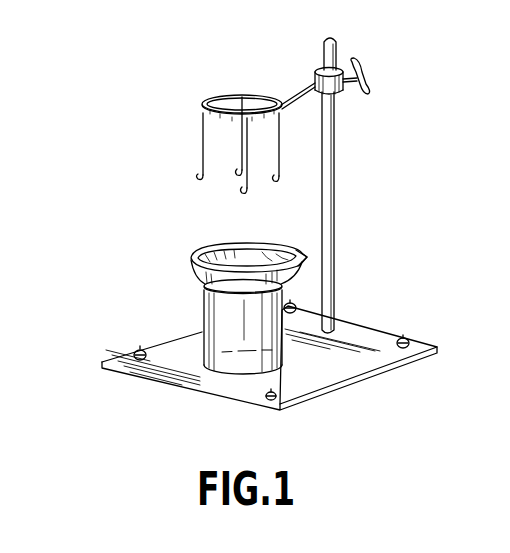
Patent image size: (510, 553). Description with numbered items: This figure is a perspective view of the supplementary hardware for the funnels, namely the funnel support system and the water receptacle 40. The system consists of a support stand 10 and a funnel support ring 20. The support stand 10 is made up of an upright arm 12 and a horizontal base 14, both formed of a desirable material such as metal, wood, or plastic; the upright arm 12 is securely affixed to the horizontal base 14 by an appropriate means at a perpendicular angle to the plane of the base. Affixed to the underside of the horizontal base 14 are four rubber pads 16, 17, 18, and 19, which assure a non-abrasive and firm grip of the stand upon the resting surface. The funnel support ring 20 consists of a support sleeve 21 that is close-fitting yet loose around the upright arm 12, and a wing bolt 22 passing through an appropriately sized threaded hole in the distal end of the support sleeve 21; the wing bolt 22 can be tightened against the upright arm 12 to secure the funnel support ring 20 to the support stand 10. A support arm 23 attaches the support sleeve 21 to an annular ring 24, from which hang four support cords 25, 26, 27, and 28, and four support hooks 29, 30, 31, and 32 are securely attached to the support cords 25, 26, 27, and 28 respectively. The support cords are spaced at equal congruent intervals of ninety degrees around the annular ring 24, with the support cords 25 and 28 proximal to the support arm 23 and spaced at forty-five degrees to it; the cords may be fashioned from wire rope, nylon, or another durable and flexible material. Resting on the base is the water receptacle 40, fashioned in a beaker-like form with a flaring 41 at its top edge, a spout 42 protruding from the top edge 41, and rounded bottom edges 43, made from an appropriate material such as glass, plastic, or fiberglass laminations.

The support stand 10 is at (342, 165).
The upright arm 12 is at (337, 130).
The horizontal base 14 is at (368, 340).
The rubber pad 16 is at (133, 348).
The rubber pad 17 is at (262, 402).
The rubber pad 18 is at (412, 336).
The rubber pad 19 is at (298, 306).
The funnel support ring 20 is at (300, 77).
The support sleeve 21 is at (320, 68).
The wing bolt 22 is at (357, 62).
The support arm 23 is at (286, 97).
The annular ring 24 is at (226, 94).
The support cord 25 is at (242, 131).
The support cord 26 is at (202, 126).
The support cord 27 is at (243, 176).
The support cord 28 is at (280, 153).
The support hook 29 is at (237, 172).
The support hook 30 is at (196, 184).
The support hook 31 is at (244, 195).
The support hook 32 is at (278, 184).
The water receptacle 40 is at (207, 305).
The flaring top edge 41 is at (203, 255).
The spout 42 is at (306, 258).
The rounded bottom edges 43 is at (194, 380).